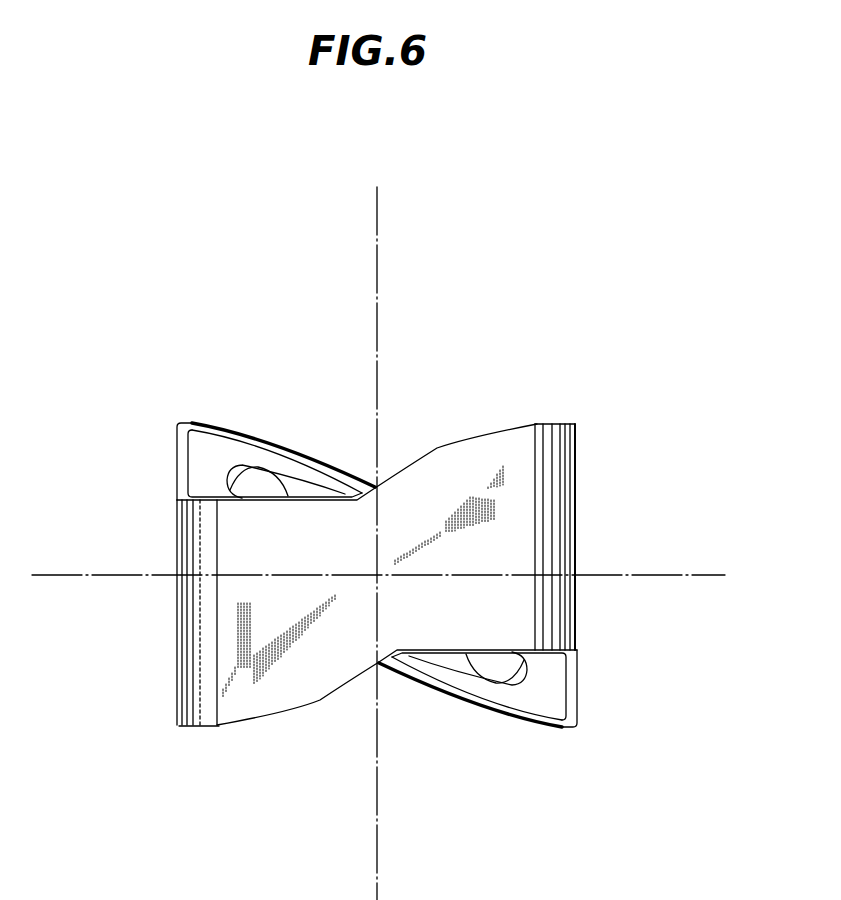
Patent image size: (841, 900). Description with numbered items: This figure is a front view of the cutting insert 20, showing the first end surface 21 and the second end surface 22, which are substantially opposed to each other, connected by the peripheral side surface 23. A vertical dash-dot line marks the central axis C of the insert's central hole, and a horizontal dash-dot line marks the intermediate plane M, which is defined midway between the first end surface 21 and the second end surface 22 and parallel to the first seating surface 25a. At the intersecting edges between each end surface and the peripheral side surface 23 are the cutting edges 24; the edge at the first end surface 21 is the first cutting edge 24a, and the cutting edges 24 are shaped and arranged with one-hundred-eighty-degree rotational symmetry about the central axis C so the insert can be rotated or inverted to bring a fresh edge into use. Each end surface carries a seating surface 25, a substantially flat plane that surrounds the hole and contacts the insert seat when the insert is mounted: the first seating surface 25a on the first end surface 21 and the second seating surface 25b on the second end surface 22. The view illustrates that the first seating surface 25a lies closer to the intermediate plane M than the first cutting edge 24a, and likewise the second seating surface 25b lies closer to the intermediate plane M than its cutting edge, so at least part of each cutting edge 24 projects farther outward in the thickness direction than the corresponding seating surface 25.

The cutting insert 20 is at (357, 543).
The first end surface 21 is at (340, 497).
The second end surface 22 is at (433, 652).
The peripheral side surface 23 is at (177, 607).
The cutting edge 24 is at (177, 436).
The first cutting edge 24a is at (558, 422).
The seating surface 25 is at (228, 467).
The first seating surface 25a is at (228, 498).
The second seating surface 25b is at (533, 718).
The central axis C is at (377, 222).
The intermediate plane M is at (706, 576).